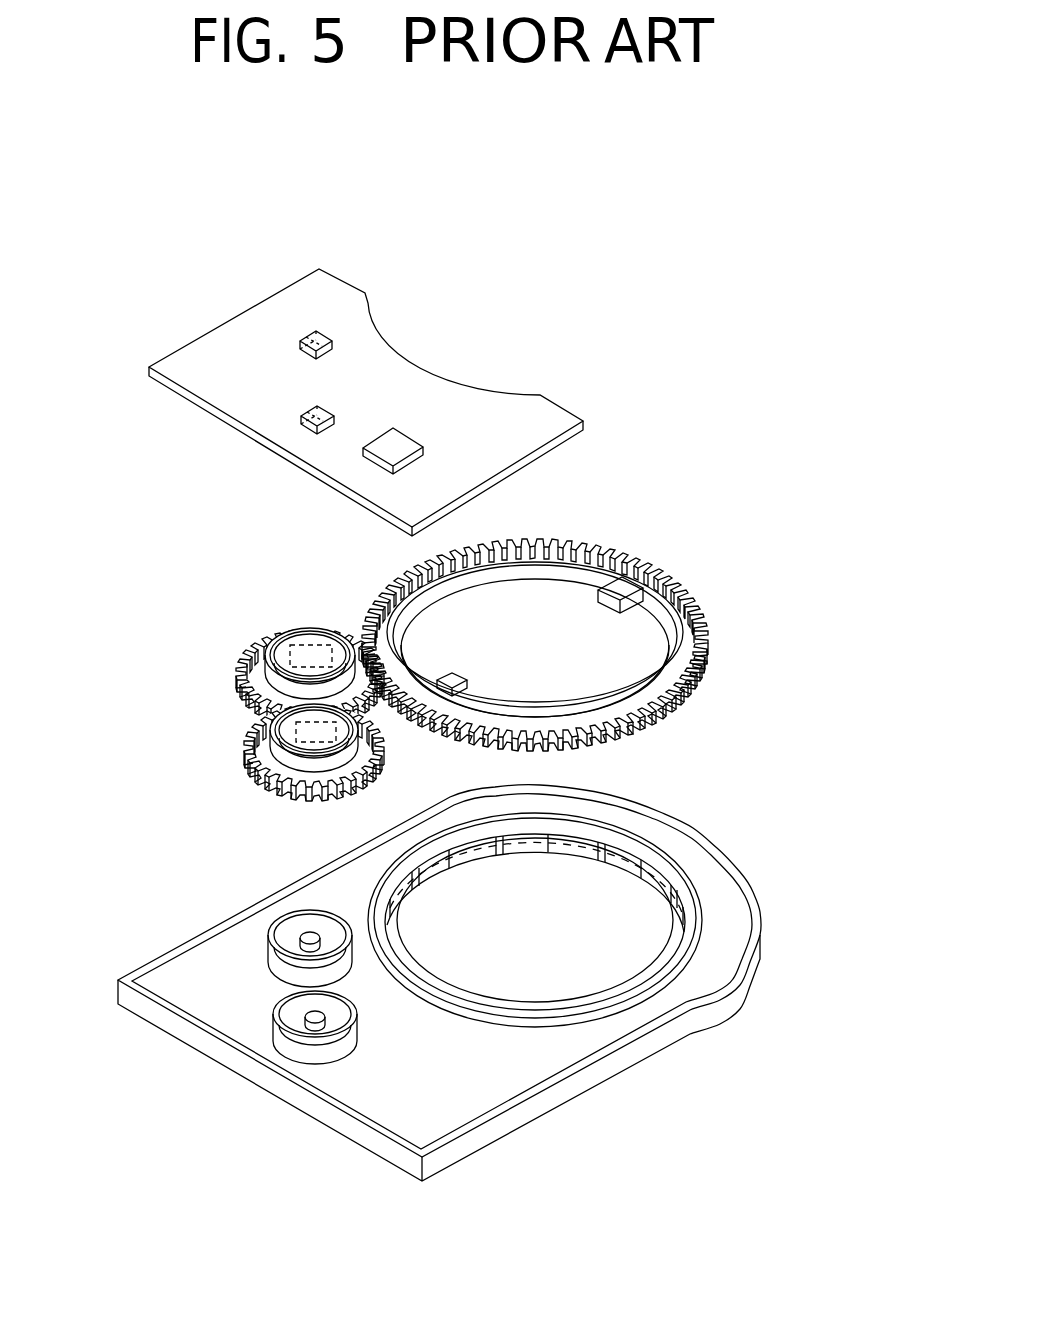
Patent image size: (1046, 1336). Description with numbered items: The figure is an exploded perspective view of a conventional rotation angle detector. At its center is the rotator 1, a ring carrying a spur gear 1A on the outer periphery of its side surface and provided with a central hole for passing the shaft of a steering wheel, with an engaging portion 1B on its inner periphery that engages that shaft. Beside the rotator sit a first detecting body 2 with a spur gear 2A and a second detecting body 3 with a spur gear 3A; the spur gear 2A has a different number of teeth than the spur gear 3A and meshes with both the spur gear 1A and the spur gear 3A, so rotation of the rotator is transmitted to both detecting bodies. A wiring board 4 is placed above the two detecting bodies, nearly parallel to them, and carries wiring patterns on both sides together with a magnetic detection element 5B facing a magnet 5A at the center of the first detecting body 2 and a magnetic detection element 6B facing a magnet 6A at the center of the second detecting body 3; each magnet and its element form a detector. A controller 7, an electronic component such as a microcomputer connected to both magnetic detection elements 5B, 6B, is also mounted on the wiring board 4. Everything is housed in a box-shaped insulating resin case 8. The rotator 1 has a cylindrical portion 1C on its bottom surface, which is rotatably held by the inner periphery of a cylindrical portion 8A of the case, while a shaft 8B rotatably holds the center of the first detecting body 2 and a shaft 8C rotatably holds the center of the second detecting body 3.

The rotator 1 is at (620, 585).
The spur gear 1A is at (708, 627).
The engaging portion 1B is at (643, 580).
The cylindrical portion 1C is at (547, 577).
The first detecting body 2 is at (228, 628).
The spur gear 2A is at (235, 683).
The second detecting body 3 is at (226, 775).
The spur gear 3A is at (247, 764).
The wiring board 4 is at (566, 413).
The magnet 5A is at (292, 645).
The magnetic detection element 5B is at (304, 333).
The magnet 6A is at (283, 737).
The magnetic detection element 6B is at (300, 421).
The controller 7 is at (398, 440).
The case 8 is at (466, 983).
The cylindrical portion 8A is at (688, 897).
The shaft 8B is at (300, 943).
The shaft 8C is at (300, 1020).